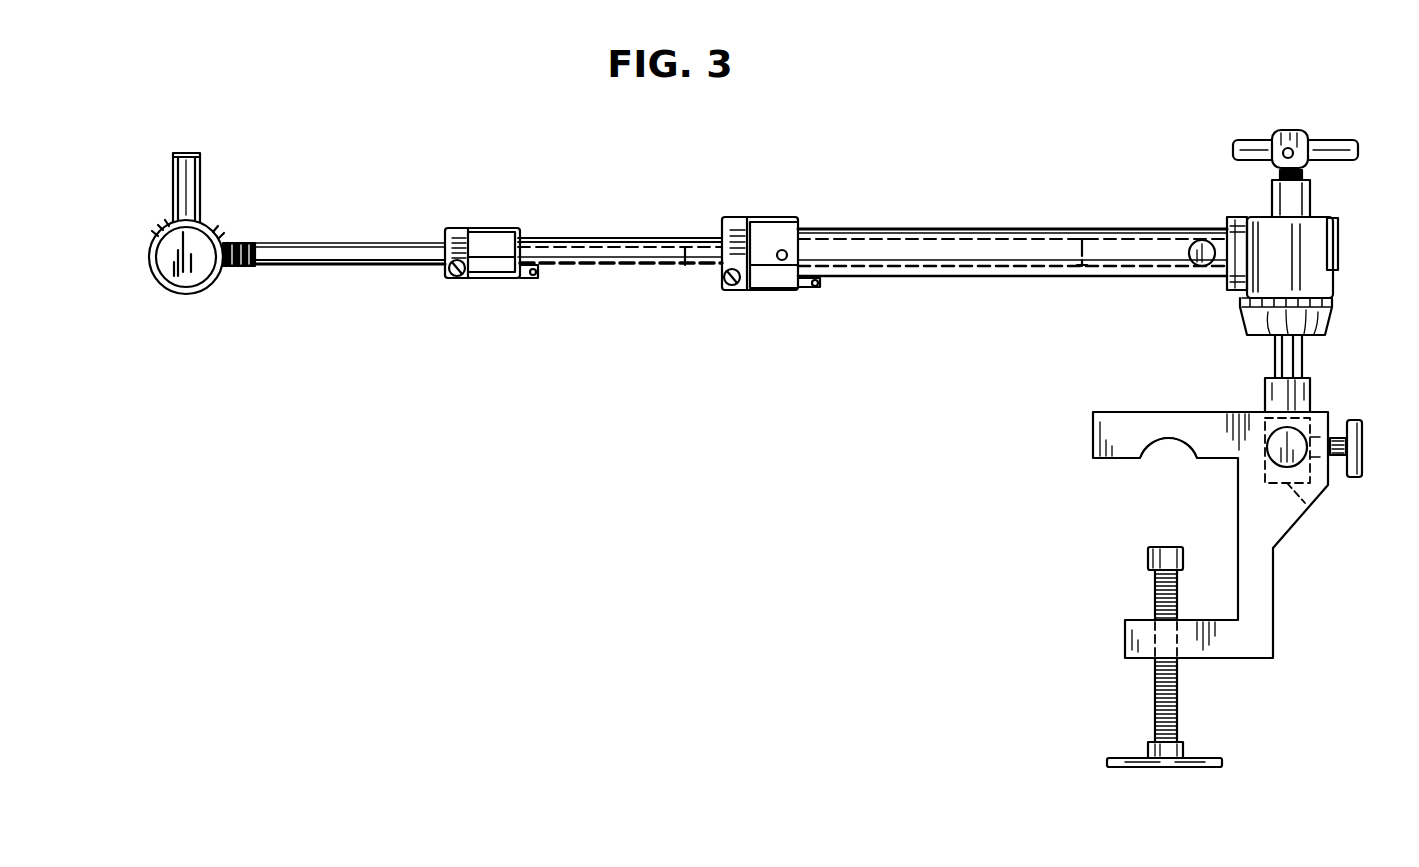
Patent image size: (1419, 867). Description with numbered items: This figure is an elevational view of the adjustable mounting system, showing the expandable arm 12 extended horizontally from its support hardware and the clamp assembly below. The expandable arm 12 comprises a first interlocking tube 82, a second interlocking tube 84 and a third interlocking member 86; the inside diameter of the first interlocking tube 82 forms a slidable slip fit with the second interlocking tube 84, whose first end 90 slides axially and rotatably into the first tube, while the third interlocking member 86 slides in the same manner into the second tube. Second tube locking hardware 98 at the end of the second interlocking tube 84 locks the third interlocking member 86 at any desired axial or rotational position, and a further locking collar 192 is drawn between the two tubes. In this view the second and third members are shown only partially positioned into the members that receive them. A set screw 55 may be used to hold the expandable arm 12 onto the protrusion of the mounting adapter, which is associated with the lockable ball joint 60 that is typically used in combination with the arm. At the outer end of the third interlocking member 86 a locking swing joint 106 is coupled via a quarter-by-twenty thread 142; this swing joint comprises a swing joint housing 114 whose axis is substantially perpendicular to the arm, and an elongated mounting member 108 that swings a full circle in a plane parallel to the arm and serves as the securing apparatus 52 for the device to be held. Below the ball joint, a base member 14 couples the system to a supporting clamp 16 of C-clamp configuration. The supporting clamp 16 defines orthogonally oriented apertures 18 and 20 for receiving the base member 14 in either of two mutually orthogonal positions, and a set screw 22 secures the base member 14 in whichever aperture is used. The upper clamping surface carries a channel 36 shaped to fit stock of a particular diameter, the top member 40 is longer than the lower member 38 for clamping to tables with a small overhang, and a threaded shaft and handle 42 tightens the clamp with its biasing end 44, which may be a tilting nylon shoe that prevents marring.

The expandable arm 12 is at (617, 203).
The base member 14 is at (1310, 353).
The supporting clamp 16 is at (1300, 623).
The aperture 18 is at (1302, 505).
The aperture 20 is at (1270, 430).
The set screw 22 is at (1368, 438).
The channel 36 is at (1172, 450).
The lower member 38 is at (1140, 641).
The top member 40 is at (1110, 437).
The threaded shaft and handle 42 is at (1155, 698).
The biasing end 44 is at (1147, 558).
The securing apparatus 52 is at (187, 153).
The set screw 55 is at (1195, 259).
The lockable ball joint 60 is at (1395, 254).
The first interlocking tube 82 is at (948, 275).
The second interlocking tube 84 is at (635, 258).
The third interlocking member 86 is at (388, 258).
The first end of second interlocking tube 90 is at (1200, 218).
The second tube locking hardware 98 is at (495, 274).
The locking swing joint 106 is at (78, 275).
The elongated mounting member 108 is at (192, 196).
The swing joint housing 114 is at (177, 291).
The thread 142 is at (255, 268).
The coupling 192 is at (768, 285).